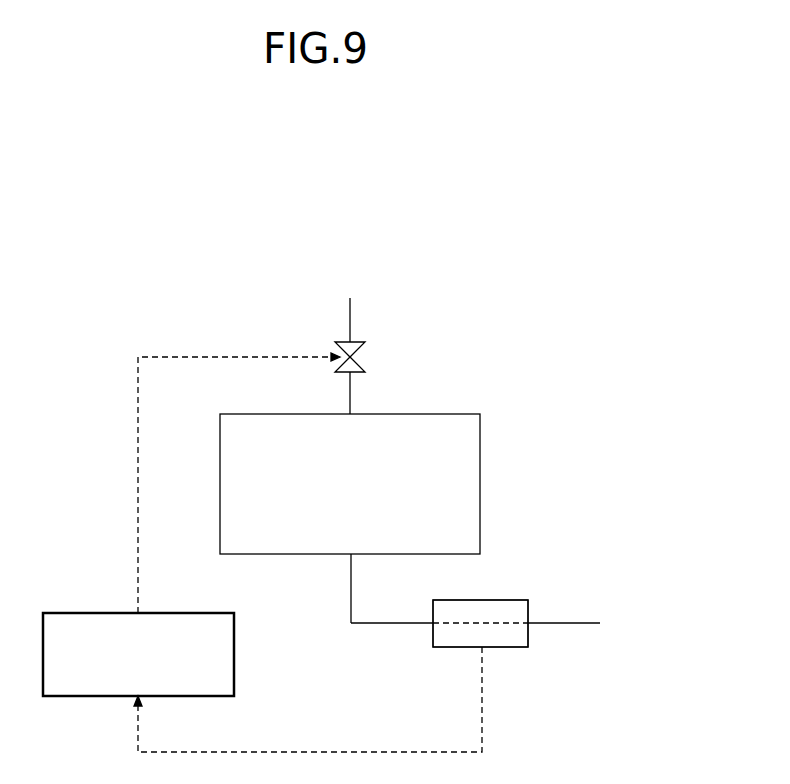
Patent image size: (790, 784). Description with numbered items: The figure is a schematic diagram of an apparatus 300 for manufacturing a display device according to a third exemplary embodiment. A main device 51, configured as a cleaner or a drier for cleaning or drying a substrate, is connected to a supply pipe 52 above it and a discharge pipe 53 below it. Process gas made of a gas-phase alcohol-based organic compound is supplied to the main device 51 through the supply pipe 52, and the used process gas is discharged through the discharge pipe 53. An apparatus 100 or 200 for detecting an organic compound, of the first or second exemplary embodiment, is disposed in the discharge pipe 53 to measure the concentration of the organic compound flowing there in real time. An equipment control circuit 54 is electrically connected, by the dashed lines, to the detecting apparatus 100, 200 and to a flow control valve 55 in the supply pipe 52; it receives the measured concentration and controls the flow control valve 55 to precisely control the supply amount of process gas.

The apparatus for manufacturing a display device 300 is at (540, 318).
The main device 51 is at (481, 469).
The supply pipe 52 is at (352, 318).
The flow control valve 55 is at (338, 341).
The discharge pipe 53 is at (563, 625).
The apparatus for detecting an organic compound 100 is at (510, 600).
The apparatus for detecting an organic compound 200 is at (480, 623).
The equipment control circuit 54 is at (235, 658).